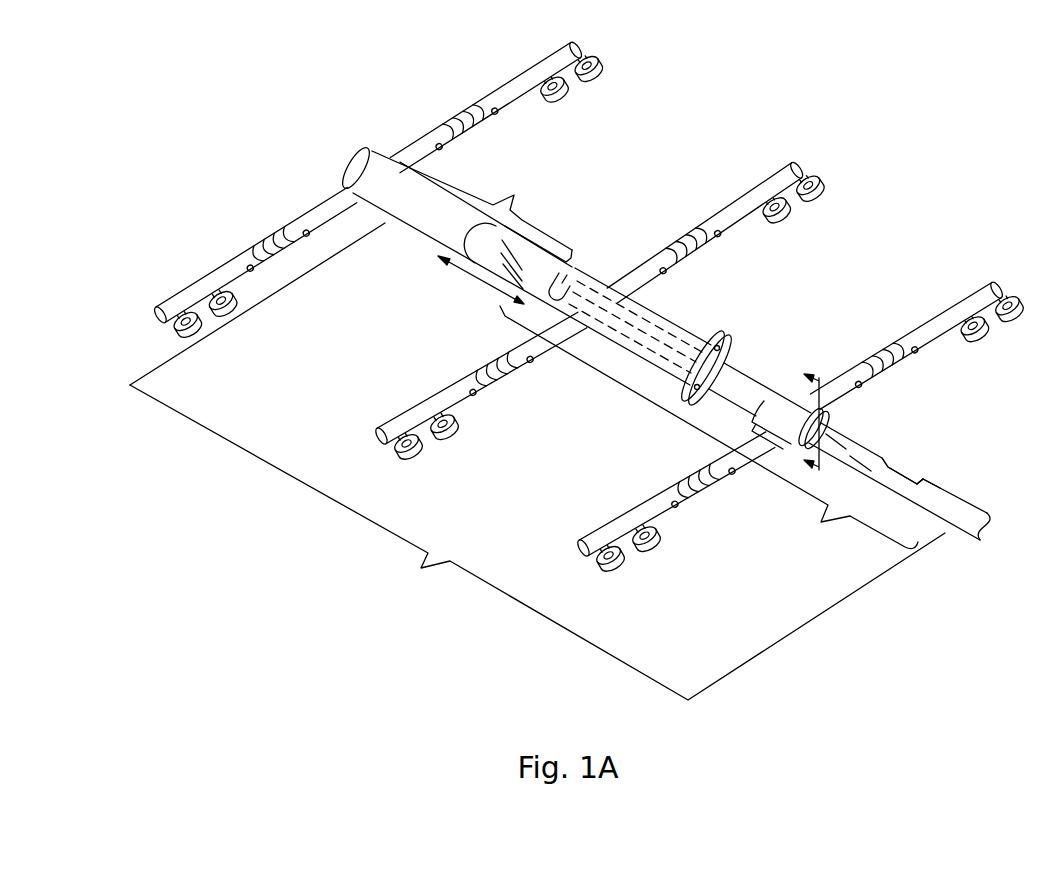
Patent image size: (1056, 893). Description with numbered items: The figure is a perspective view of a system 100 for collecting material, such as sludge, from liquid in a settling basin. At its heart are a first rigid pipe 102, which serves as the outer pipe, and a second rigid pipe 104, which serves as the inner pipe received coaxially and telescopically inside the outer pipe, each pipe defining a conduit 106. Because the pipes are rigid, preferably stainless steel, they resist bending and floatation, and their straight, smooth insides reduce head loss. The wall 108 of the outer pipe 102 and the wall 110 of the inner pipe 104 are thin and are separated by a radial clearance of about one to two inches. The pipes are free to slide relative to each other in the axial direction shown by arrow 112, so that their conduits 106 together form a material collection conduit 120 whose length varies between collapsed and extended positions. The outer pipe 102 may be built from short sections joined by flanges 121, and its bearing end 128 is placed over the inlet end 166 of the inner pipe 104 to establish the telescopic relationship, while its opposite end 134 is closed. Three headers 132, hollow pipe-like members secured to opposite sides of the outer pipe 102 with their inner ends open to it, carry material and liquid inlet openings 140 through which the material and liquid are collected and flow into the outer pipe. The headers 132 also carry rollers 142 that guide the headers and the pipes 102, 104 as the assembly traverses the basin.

The system 100 is at (757, 86).
The first rigid pipe 102 is at (350, 152).
The second rigid pipe 104 is at (958, 506).
The conduit 106 is at (518, 220).
The wall 108 is at (830, 414).
The wall 110 is at (925, 478).
The arrow 112 is at (475, 283).
The material collection conduit 120 is at (537, 461).
The flange 121 is at (738, 330).
The bearing end 128 is at (753, 425).
The header 132 is at (500, 88).
The end 134 is at (380, 152).
The openings 140 is at (498, 110).
The rollers 142 is at (562, 92).
The inlet end 166 is at (572, 264).